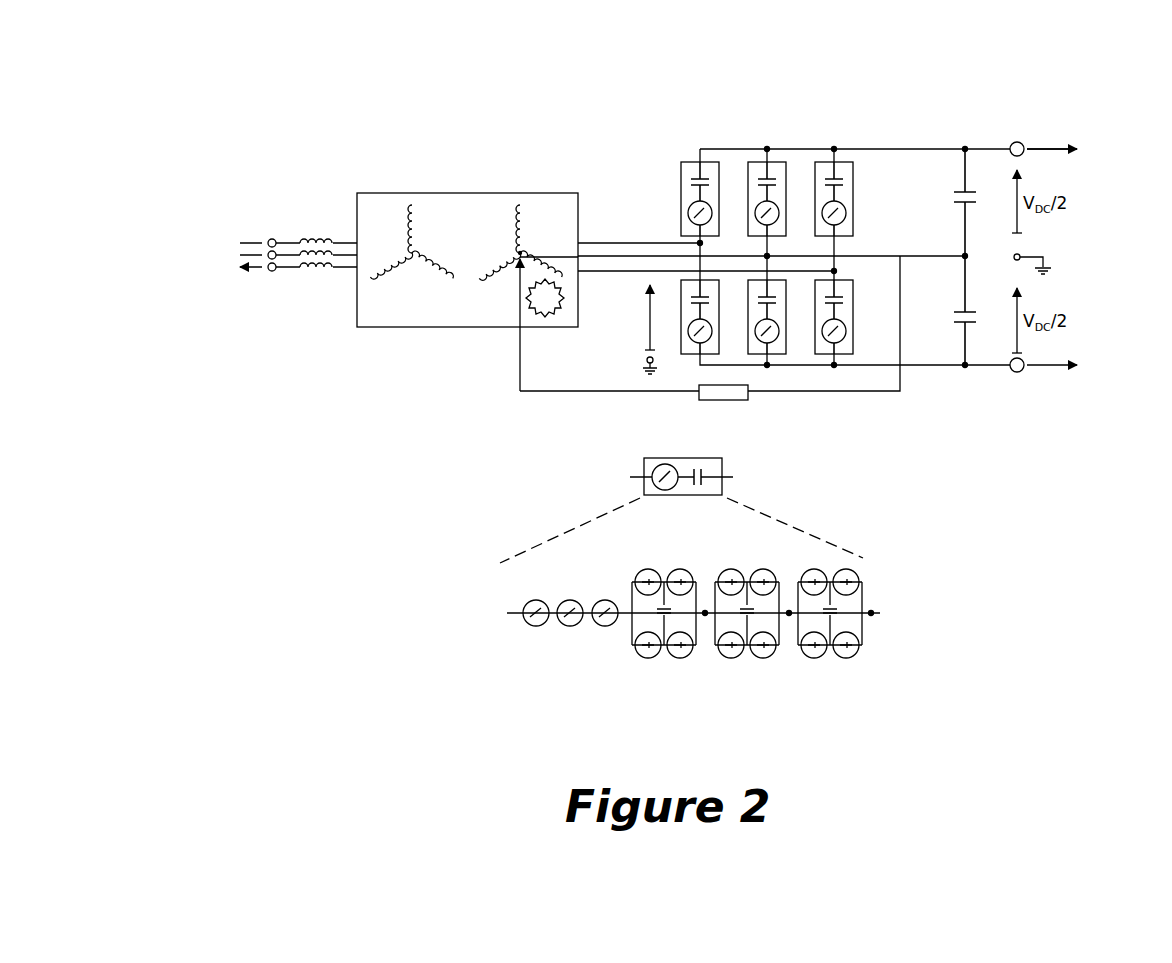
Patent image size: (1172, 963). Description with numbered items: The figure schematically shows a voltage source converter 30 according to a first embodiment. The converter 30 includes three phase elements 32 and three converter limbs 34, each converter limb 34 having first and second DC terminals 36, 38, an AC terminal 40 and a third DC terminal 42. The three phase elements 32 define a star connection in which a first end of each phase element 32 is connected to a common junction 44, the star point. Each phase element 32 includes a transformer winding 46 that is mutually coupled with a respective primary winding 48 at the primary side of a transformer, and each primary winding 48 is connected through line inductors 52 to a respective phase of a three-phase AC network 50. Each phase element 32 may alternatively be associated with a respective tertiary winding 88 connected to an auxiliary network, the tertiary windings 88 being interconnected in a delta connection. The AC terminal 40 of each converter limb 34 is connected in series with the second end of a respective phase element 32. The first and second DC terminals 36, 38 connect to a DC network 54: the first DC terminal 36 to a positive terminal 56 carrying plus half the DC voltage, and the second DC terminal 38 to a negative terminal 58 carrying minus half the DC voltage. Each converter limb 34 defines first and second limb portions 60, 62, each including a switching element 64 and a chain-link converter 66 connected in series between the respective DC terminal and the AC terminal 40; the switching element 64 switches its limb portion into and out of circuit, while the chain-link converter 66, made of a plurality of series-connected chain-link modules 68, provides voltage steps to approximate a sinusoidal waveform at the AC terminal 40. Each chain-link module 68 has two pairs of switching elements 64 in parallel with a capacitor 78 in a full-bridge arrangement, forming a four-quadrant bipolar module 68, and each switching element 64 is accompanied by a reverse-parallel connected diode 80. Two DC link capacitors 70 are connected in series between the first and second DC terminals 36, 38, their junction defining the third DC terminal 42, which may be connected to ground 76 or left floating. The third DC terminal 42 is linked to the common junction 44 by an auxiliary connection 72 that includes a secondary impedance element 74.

The voltage source converter 30 is at (508, 83).
The phase element 32 is at (550, 258).
The converter limb 34 is at (697, 100).
The first DC terminal 36 is at (700, 149).
The second DC terminal 38 is at (698, 366).
The AC terminal 40 is at (712, 245).
The third DC terminal 42 is at (972, 257).
The common junction 44 is at (512, 252).
The transformer winding 46 is at (520, 210).
The primary winding 48 is at (433, 250).
The three-phase AC network 50 is at (234, 256).
The line inductor 52 is at (327, 240).
The DC network 54 is at (1069, 259).
The positive terminal 56 is at (1017, 140).
The negative terminal 58 is at (1015, 375).
The first limb portion 60 is at (680, 190).
The second limb portion 62 is at (716, 346).
The switching element 64 is at (537, 626).
The chain-link converter 66 is at (752, 530).
The chain-link module 68 is at (827, 664).
The DC link capacitor 70 is at (953, 195).
The auxiliary connection 72 is at (872, 398).
The secondary impedance element 74 is at (717, 400).
The ground 76 is at (1047, 263).
The capacitor 78 is at (820, 612).
The reverse-parallel connected diode 80 is at (855, 572).
The tertiary winding 88 is at (561, 306).